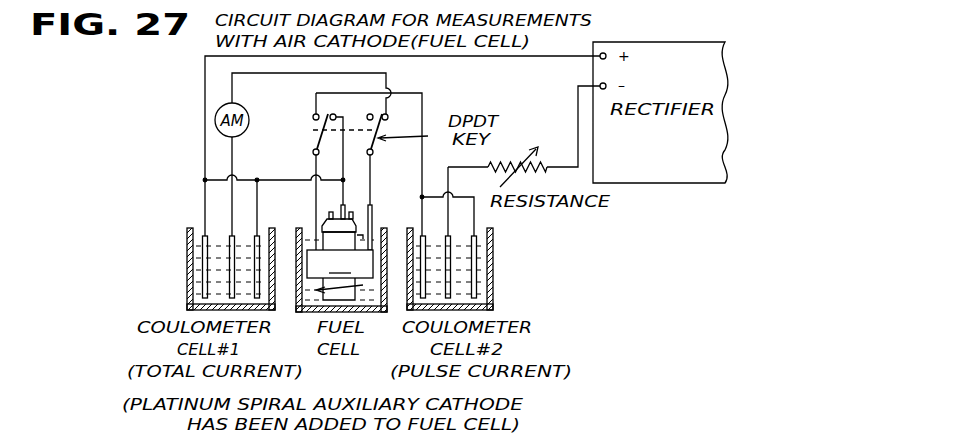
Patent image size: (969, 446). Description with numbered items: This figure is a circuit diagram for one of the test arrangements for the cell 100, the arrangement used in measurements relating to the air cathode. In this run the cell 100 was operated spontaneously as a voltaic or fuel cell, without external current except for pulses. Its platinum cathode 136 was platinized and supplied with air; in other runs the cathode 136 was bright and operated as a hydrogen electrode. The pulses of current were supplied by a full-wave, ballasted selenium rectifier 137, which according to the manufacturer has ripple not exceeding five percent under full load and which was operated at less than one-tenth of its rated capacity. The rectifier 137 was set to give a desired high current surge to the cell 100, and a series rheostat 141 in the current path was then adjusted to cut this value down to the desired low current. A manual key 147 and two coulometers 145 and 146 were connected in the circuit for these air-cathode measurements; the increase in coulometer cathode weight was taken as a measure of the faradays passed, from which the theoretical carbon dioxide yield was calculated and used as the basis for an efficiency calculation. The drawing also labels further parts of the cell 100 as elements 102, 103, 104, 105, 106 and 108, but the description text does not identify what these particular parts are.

The cell 100 is at (348, 263).
The anode 102 is at (318, 304).
The air cathode 103 is at (356, 224).
The auxiliary cathode lead 104 is at (330, 214).
The cathode lead 105 is at (352, 213).
The anode lead 106 is at (345, 192).
The electrolyte 108 is at (356, 296).
The platinum cathode 136 is at (340, 264).
The rectifier 137 is at (672, 170).
The rheostat 141 is at (505, 160).
The coulometer 145 is at (188, 285).
The coulometer 146 is at (496, 287).
The manual key 147 is at (388, 114).